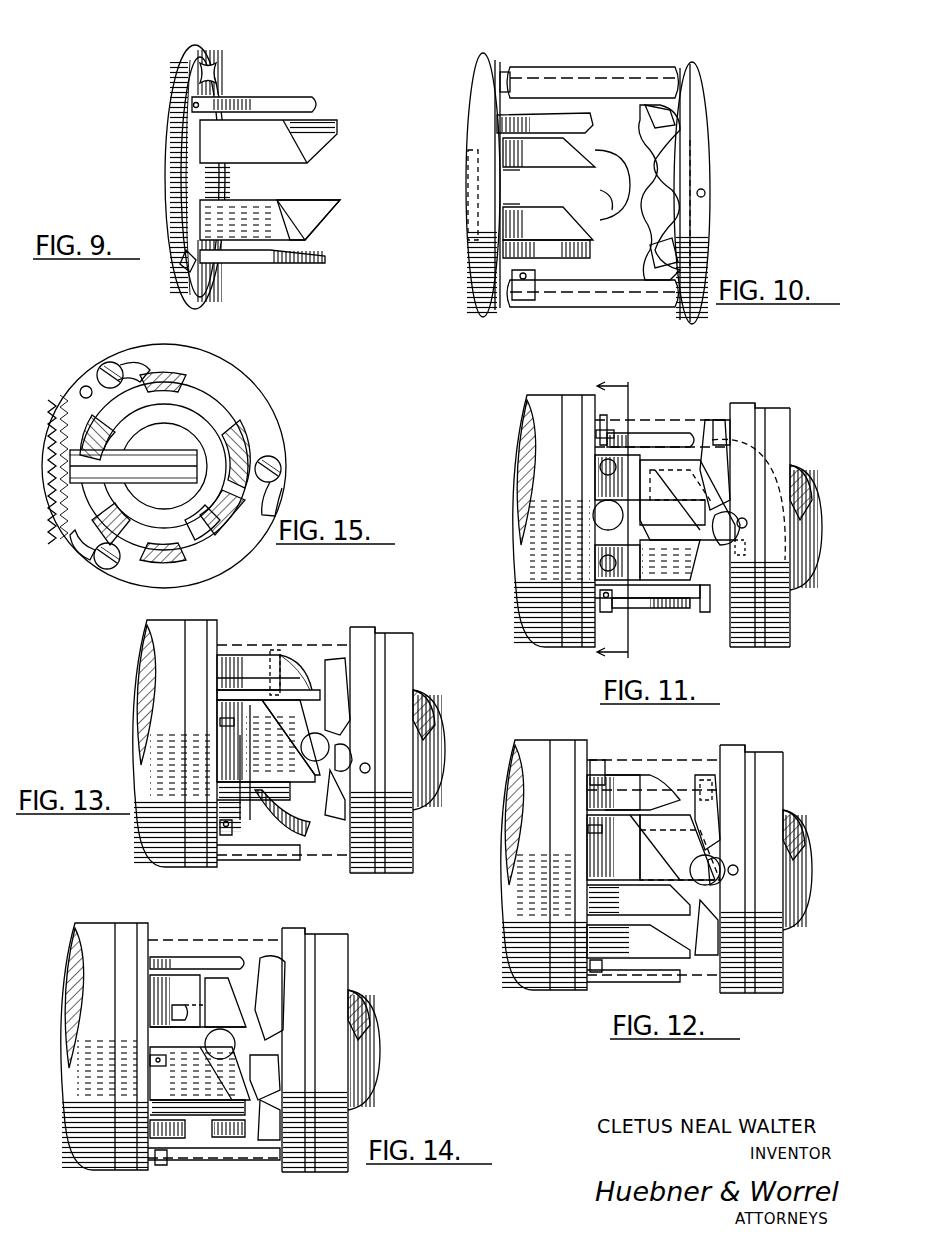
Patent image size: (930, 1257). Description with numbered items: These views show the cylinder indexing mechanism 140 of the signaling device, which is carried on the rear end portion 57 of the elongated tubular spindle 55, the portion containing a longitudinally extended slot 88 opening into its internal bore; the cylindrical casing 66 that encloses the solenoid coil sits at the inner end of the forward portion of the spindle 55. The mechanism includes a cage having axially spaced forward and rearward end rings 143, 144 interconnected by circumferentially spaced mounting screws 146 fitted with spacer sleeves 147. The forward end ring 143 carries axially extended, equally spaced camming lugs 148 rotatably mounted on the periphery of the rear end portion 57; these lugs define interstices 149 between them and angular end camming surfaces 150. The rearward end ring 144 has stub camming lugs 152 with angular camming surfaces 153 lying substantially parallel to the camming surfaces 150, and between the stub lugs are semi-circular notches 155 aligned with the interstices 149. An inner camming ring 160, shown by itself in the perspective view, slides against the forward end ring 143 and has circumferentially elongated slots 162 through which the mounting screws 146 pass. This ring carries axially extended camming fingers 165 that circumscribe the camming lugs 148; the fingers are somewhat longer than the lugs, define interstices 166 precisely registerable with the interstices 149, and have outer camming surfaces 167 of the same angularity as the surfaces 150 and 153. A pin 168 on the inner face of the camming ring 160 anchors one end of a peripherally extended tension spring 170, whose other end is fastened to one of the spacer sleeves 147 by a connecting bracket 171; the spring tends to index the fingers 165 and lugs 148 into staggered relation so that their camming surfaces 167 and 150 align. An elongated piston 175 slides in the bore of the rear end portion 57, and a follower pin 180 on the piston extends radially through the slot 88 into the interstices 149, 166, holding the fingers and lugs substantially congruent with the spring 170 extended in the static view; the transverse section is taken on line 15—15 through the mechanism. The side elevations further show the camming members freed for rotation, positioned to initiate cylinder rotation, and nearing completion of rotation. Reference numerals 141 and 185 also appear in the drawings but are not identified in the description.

In FIG. 11, the section line 15 is at (629, 518).
In FIG. 15, the spindle 55 is at (265, 462).
In FIG. 11, the rear end portion of the spindle 57 is at (805, 470).
In FIG. 13, the rear end portion of the spindle 57 is at (441, 735).
In FIG. 12, the rear end portion of the spindle 57 is at (795, 812).
In FIG. 14, the rear end portion of the spindle 57 is at (365, 992).
In FIG. 11, the cylindrical casing 66 is at (550, 468).
In FIG. 13, the cylindrical casing 66 is at (160, 728).
In FIG. 12, the cylindrical casing 66 is at (530, 855).
In FIG. 14, the cylindrical casing 66 is at (100, 925).
In FIG. 15, the slot 88 is at (46, 469).
In FIG. 11, the slot 88 is at (687, 500).
In FIG. 12, the slot 88 is at (680, 862).
In FIG. 15, the cylinder indexing mechanism 140 is at (285, 410).
In FIG. 11, the cylinder indexing mechanism 140 is at (750, 400).
In FIG. 13, the cylinder indexing mechanism 140 is at (378, 625).
In FIG. 12, the cylinder indexing mechanism 140 is at (752, 742).
In FIG. 14, the cylinder indexing mechanism 140 is at (325, 925).
In FIG. 10, the end plate 141 is at (699, 54).
In FIG. 11, the end plate 141 is at (750, 643).
In FIG. 12, the end plate 141 is at (745, 993).
In FIG. 10, the forward end ring 143 is at (485, 60).
In FIG. 11, the forward end ring 143 is at (575, 410).
In FIG. 13, the forward end ring 143 is at (195, 662).
In FIG. 12, the forward end ring 143 is at (563, 805).
In FIG. 14, the forward end ring 143 is at (130, 968).
In FIG. 10, the rearward end ring 144 is at (702, 85).
In FIG. 11, the rearward end ring 144 is at (762, 600).
In FIG. 13, the rearward end ring 144 is at (390, 642).
In FIG. 12, the rearward end ring 144 is at (760, 755).
In FIG. 14, the rearward end ring 144 is at (300, 950).
In FIG. 10, the mounting screws 146 is at (508, 65).
In FIG. 15, the mounting screws 146 is at (108, 362).
In FIG. 10, the spacer sleeves 147 is at (575, 75).
In FIG. 15, the spacer sleeves 147 is at (108, 362).
In FIG. 13, the spacer sleeves 147 is at (288, 660).
In FIG. 12, the spacer sleeves 147 is at (710, 785).
In FIG. 14, the spacer sleeves 147 is at (165, 960).
In FIG. 10, the camming lugs 148 is at (540, 175).
In FIG. 15, the camming lugs 148 is at (185, 440).
In FIG. 13, the camming lugs 148 is at (215, 705).
In FIG. 12, the camming lugs 148 is at (585, 828).
In FIG. 14, the camming lugs 148 is at (155, 1045).
In FIG. 10, the interstices 149 is at (510, 128).
In FIG. 15, the interstices 149 is at (205, 535).
In FIG. 14, the interstices 149 is at (205, 1145).
In FIG. 10, the camming surfaces 150 is at (617, 185).
In FIG. 11, the camming surfaces 150 is at (678, 435).
In FIG. 13, the camming surfaces 150 is at (272, 660).
In FIG. 12, the camming surfaces 150 is at (650, 790).
In FIG. 14, the camming surfaces 150 is at (235, 975).
In FIG. 10, the stub camming lugs 152 is at (675, 155).
In FIG. 11, the stub camming lugs 152 is at (765, 460).
In FIG. 13, the stub camming lugs 152 is at (340, 700).
In FIG. 12, the stub camming lugs 152 is at (728, 810).
In FIG. 14, the stub camming lugs 152 is at (275, 1020).
In FIG. 10, the camming surfaces 153 is at (645, 240).
In FIG. 10, the semi-circular notches 155 is at (675, 120).
In FIG. 11, the semi-circular notches 155 is at (728, 515).
In FIG. 13, the semi-circular notches 155 is at (350, 755).
In FIG. 12, the semi-circular notches 155 is at (722, 860).
In FIG. 9, the inner camming ring 160 is at (185, 80).
In FIG. 15, the inner camming ring 160 is at (255, 410).
In FIG. 11, the inner camming ring 160 is at (585, 648).
In FIG. 13, the inner camming ring 160 is at (195, 660).
In FIG. 12, the inner camming ring 160 is at (583, 748).
In FIG. 14, the inner camming ring 160 is at (145, 1165).
In FIG. 9, the slots 162 is at (220, 75).
In FIG. 15, the slots 162 is at (148, 365).
In FIG. 9, the camming fingers 165 is at (262, 156).
In FIG. 15, the camming fingers 165 is at (165, 380).
In FIG. 11, the camming fingers 165 is at (595, 490).
In FIG. 13, the camming fingers 165 is at (220, 757).
In FIG. 12, the camming fingers 165 is at (660, 879).
In FIG. 14, the camming fingers 165 is at (150, 1090).
In FIG. 9, the interstices 166 is at (255, 180).
In FIG. 9, the outer camming surfaces 167 is at (340, 205).
In FIG. 11, the outer camming surfaces 167 is at (690, 565).
In FIG. 13, the outer camming surfaces 167 is at (288, 740).
In FIG. 12, the outer camming surfaces 167 is at (680, 815).
In FIG. 14, the outer camming surfaces 167 is at (290, 1080).
In FIG. 9, the pin 168 is at (190, 103).
In FIG. 15, the pin 168 is at (90, 392).
In FIG. 11, the pin 168 is at (596, 435).
In FIG. 13, the pin 168 is at (220, 722).
In FIG. 12, the pin 168 is at (588, 829).
In FIG. 14, the pin 168 is at (150, 1060).
In FIG. 15, the tension spring 170 is at (62, 440).
In FIG. 11, the tension spring 170 is at (595, 578).
In FIG. 13, the tension spring 170 is at (220, 780).
In FIG. 12, the tension spring 170 is at (590, 890).
In FIG. 14, the tension spring 170 is at (150, 1115).
In FIG. 15, the connecting bracket 171 is at (75, 560).
In FIG. 11, the connecting bracket 171 is at (620, 608).
In FIG. 13, the connecting bracket 171 is at (240, 848).
In FIG. 12, the connecting bracket 171 is at (595, 975).
In FIG. 14, the connecting bracket 171 is at (160, 1168).
In FIG. 15, the piston 175 is at (222, 398).
In FIG. 15, the follower pin 180 is at (175, 440).
In FIG. 11, the follower pin 180 is at (595, 515).
In FIG. 13, the follower pin 180 is at (325, 735).
In FIG. 12, the follower pin 180 is at (720, 875).
In FIG. 14, the follower pin 180 is at (234, 1044).
In FIG. 10, the hole 185 is at (706, 195).
In FIG. 11, the hole 185 is at (748, 520).
In FIG. 12, the hole 185 is at (738, 865).